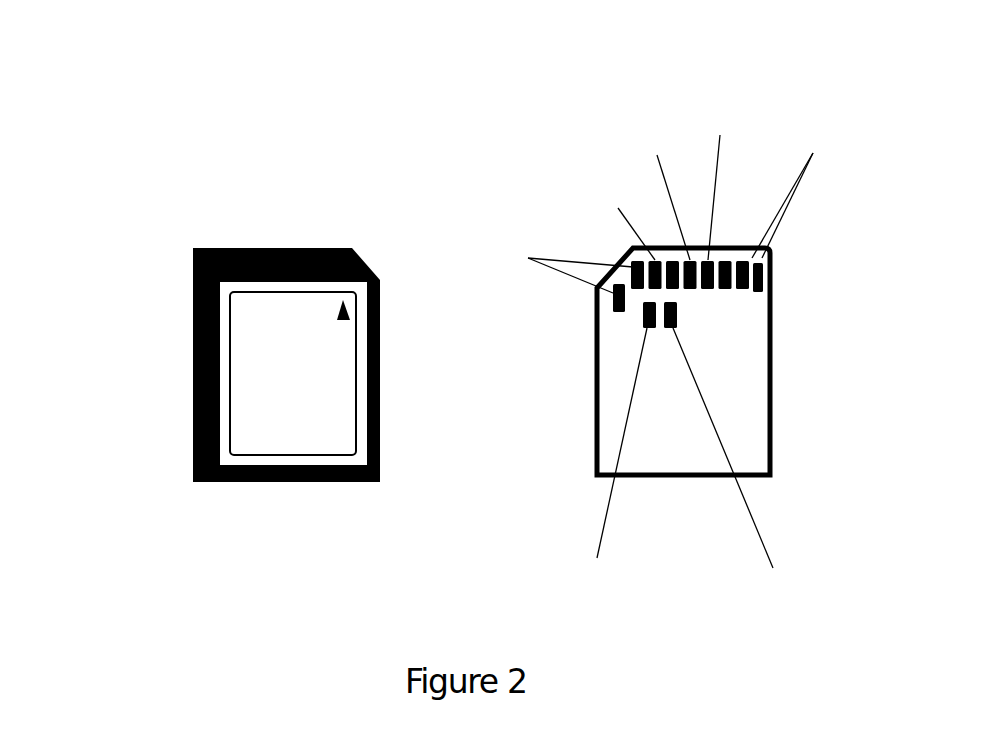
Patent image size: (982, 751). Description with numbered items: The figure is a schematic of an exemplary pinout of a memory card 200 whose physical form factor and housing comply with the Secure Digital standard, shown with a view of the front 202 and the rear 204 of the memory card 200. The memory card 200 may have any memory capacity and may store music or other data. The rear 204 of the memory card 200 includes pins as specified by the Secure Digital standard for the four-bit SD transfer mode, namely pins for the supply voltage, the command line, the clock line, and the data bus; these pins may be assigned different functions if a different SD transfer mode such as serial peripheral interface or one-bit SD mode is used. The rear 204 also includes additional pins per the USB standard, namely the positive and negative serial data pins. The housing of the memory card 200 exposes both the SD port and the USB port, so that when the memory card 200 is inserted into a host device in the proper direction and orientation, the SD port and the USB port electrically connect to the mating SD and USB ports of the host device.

The memory card 200 is at (122, 66).
The front 202 is at (283, 248).
The rear 204 is at (773, 427).